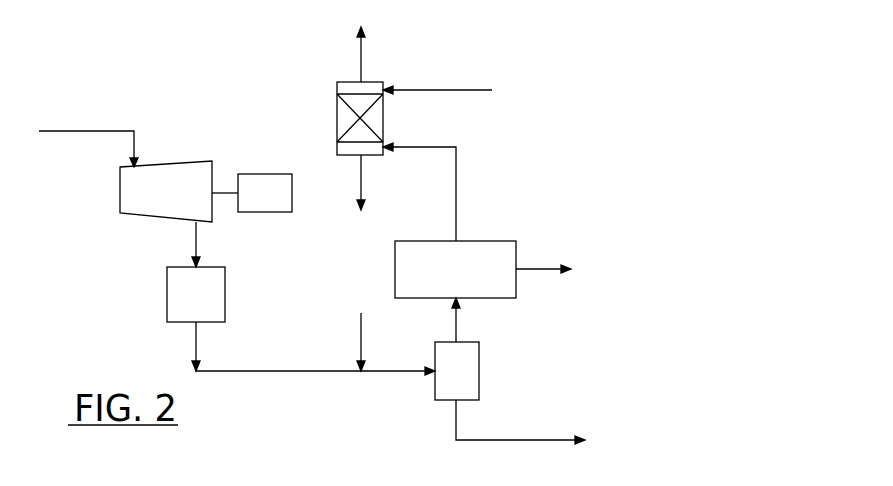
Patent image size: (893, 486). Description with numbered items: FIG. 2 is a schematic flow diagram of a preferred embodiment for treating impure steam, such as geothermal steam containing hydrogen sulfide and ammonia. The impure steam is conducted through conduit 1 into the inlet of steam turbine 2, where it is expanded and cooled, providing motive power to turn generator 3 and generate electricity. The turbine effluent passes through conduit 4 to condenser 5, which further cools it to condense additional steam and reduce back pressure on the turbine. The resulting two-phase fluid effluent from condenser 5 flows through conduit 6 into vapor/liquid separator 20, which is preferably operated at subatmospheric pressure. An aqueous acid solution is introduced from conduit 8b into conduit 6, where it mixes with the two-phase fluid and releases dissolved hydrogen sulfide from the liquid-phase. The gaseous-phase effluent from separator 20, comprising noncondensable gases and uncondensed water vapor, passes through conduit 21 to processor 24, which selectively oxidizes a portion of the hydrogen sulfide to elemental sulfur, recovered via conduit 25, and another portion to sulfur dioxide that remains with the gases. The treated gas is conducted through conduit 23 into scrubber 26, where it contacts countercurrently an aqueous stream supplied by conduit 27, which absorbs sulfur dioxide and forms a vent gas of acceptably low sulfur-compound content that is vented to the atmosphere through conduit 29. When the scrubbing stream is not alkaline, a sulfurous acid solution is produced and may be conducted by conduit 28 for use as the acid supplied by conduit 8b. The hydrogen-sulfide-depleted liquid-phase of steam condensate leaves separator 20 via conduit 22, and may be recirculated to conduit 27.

The conduit 1 is at (73, 131).
The steam turbine 2 is at (163, 163).
The generator 3 is at (252, 174).
The conduit 4 is at (199, 244).
The condenser 5 is at (228, 292).
The conduit 6 is at (378, 371).
The conduit 8b is at (363, 338).
The vapor/liquid separator 20 is at (480, 368).
The conduit 21 is at (460, 323).
The conduit 22 is at (492, 440).
The conduit 23 is at (458, 190).
The processor 24 is at (487, 241).
The conduit 25 is at (528, 263).
The scrubber 26 is at (383, 122).
The conduit 27 is at (422, 90).
The conduit 28 is at (362, 185).
The conduit 29 is at (362, 59).